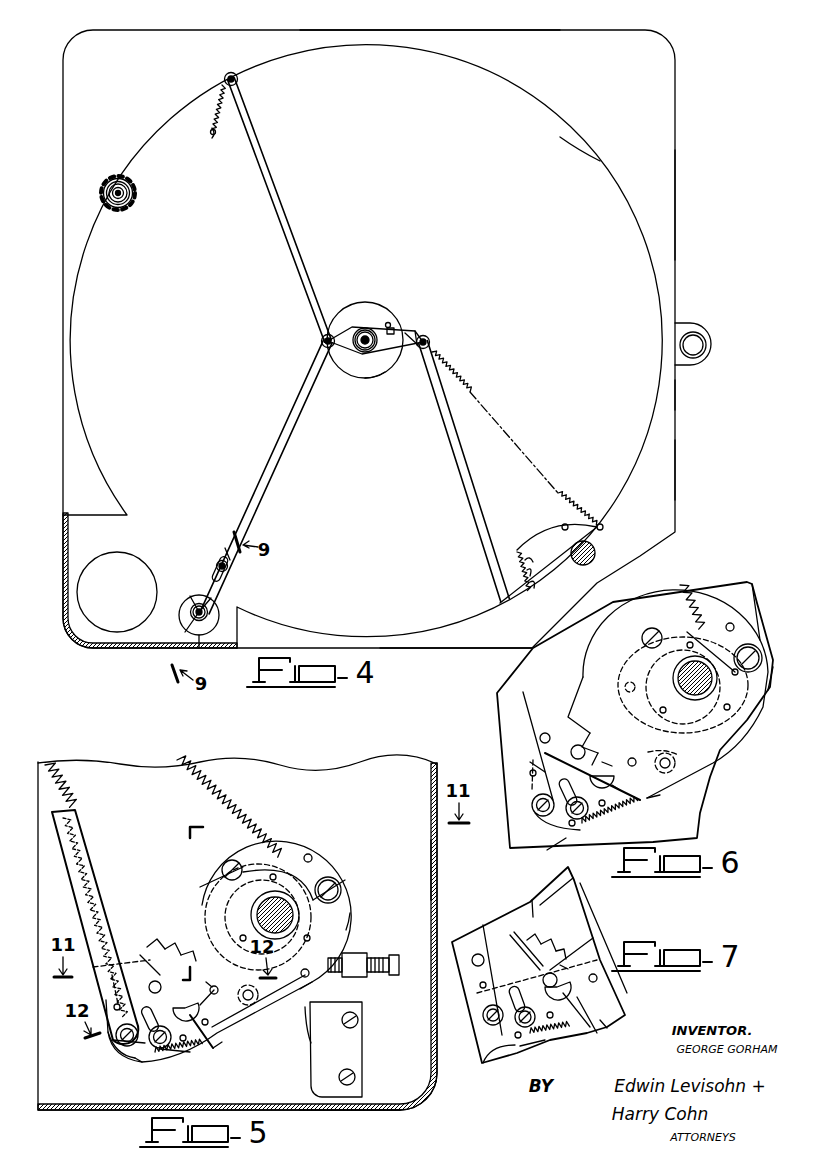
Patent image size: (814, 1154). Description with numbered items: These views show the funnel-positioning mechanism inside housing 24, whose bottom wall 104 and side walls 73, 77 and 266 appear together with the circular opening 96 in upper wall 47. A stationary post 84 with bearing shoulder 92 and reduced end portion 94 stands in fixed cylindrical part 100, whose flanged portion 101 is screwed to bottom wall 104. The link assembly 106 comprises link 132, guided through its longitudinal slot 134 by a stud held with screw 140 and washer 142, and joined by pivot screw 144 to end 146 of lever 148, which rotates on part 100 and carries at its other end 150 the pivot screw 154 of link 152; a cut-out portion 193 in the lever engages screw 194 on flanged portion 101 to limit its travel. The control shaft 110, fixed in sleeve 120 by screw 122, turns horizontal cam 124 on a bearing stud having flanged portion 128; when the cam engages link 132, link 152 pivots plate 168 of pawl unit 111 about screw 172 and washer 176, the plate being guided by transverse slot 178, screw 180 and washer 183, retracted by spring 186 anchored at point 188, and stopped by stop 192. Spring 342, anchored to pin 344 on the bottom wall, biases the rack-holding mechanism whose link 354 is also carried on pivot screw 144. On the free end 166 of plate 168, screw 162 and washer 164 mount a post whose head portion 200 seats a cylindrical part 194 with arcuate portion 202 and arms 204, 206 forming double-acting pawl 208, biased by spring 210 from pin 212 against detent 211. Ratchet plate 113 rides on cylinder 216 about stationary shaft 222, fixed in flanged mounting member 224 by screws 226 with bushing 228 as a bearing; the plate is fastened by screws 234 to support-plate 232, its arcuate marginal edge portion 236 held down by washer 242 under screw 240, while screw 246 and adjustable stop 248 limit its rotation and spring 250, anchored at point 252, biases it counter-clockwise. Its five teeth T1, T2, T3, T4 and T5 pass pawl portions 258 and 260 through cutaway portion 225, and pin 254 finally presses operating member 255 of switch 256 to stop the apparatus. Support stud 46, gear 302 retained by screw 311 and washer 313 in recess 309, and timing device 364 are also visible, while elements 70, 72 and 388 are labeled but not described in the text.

In FIG. 4, the housing 24 is at (683, 210).
In FIG. 4, the support stud 46 is at (584, 565).
In FIG. 4, the upper housing wall 47 is at (662, 468).
In FIG. 4, the knob 70 is at (700, 336).
In FIG. 4, the knob bushing 72 is at (711, 346).
In FIG. 4, the side wall 73 is at (678, 398).
In FIG. 5, the side wall 73 is at (437, 869).
In FIG. 4, the side wall 77 is at (487, 650).
In FIG. 5, the side wall 77 is at (345, 1112).
In FIG. 4, the stationary vertical shaft 84 is at (352, 333).
In FIG. 4, the horizontal bearing shoulder 92 is at (363, 348).
In FIG. 4, the reduced end portion 94 is at (365, 329).
In FIG. 4, the circular opening 96 is at (577, 138).
In FIG. 4, the fixed cylindrical part 100 is at (362, 383).
In FIG. 4, the flanged portion 101 is at (357, 306).
In FIG. 4, the bottom wall 104 is at (68, 541).
In FIG. 6, the bottom wall 104 is at (749, 582).
In FIG. 5, the bottom wall 104 is at (352, 765).
In FIG. 7, the bottom wall 104 is at (527, 896).
In FIG. 4, the link assembly 106 is at (306, 354).
In FIG. 4, the rotatable shaft 110 is at (194, 606).
In FIG. 6, the pawl unit 111 is at (540, 831).
In FIG. 5, the pawl unit 111 is at (122, 1066).
In FIG. 7, the pawl unit 111 is at (489, 1047).
In FIG. 4, the ratchet plate 113 is at (541, 542).
In FIG. 6, the ratchet plate 113 is at (600, 673).
In FIG. 5, the ratchet plate 113 is at (193, 892).
In FIG. 7, the ratchet plate 113 is at (580, 921).
In FIG. 4, the rotatable sleeve 120 is at (189, 618).
In FIG. 4, the screw 122 is at (212, 606).
In FIG. 4, the horizontal cam 124 is at (207, 632).
In FIG. 4, the flanged portion 128 is at (195, 600).
In FIG. 4, the link 132 is at (262, 476).
In FIG. 4, the longitudinal slot 134 is at (213, 571).
In FIG. 4, the screw 140 is at (222, 561).
In FIG. 4, the washer 142 is at (228, 566).
In FIG. 4, the pivot screw 144 is at (323, 340).
In FIG. 4, the lever end 146 is at (337, 338).
In FIG. 4, the lever 148 is at (410, 338).
In FIG. 4, the lever end 150 is at (416, 349).
In FIG. 4, the link 152 is at (444, 453).
In FIG. 6, the link 152 is at (525, 700).
In FIG. 5, the link 152 is at (88, 832).
In FIG. 7, the link 152 is at (470, 930).
In FIG. 4, the pivot screw 154 is at (430, 341).
In FIG. 6, the screw 162 is at (532, 804).
In FIG. 5, the screw 162 is at (116, 1037).
In FIG. 7, the screw 162 is at (483, 1016).
In FIG. 6, the washer 164 is at (566, 810).
In FIG. 5, the washer 164 is at (149, 1040).
In FIG. 7, the washer 164 is at (515, 1022).
In FIG. 6, the free end 166 is at (556, 830).
In FIG. 5, the free end 166 is at (127, 1062).
In FIG. 7, the free end 166 is at (501, 1041).
In FIG. 6, the pivoted plate 168 is at (566, 840).
In FIG. 5, the pivoted plate 168 is at (252, 1010).
In FIG. 7, the pivoted plate 168 is at (513, 1047).
In FIG. 6, the screw 172 is at (678, 763).
In FIG. 5, the screw 172 is at (256, 996).
In FIG. 6, the washer 176 is at (680, 775).
In FIG. 5, the washer 176 is at (258, 1002).
In FIG. 6, the transverse slot 178 is at (568, 792).
In FIG. 5, the transverse slot 178 is at (153, 1008).
In FIG. 7, the transverse slot 178 is at (517, 999).
In FIG. 5, the screw 180 is at (178, 1040).
In FIG. 5, the washer 183 is at (143, 1043).
In FIG. 5, the spring 186 is at (75, 795).
In FIG. 6, the spring attachment point 188 is at (530, 775).
In FIG. 5, the spring attachment point 188 is at (114, 1006).
In FIG. 7, the spring attachment point 188 is at (480, 988).
In FIG. 6, the stop 192 is at (574, 750).
In FIG. 5, the stop 192 is at (152, 982).
In FIG. 7, the stop 192 is at (542, 977).
In FIG. 4, the cut-out portion 193 is at (397, 331).
In FIG. 4, the cylindrical part 194 is at (391, 322).
In FIG. 7, the cylindrical part 194 is at (605, 1029).
In FIG. 6, the circular head portion 200 is at (614, 776).
In FIG. 5, the circular head portion 200 is at (198, 1005).
In FIG. 7, the circular head portion 200 is at (558, 991).
In FIG. 6, the arcuate portion 202 is at (622, 786).
In FIG. 7, the arcuate portion 202 is at (590, 1034).
In FIG. 6, the pawl arm 204 is at (652, 797).
In FIG. 5, the pawl arm 204 is at (218, 1044).
In FIG. 4, the pawl arm 206 is at (520, 552).
In FIG. 6, the pawl arm 206 is at (530, 762).
In FIG. 5, the pawl arm 206 is at (95, 969).
In FIG. 7, the pawl arm 206 is at (528, 930).
In FIG. 6, the double-acting pawl 208 is at (538, 790).
In FIG. 5, the double-acting pawl 208 is at (200, 1017).
In FIG. 6, the spring 210 is at (618, 815).
In FIG. 5, the spring 210 is at (188, 1056).
In FIG. 7, the spring 210 is at (556, 1038).
In FIG. 6, the detent 211 is at (604, 820).
In FIG. 5, the detent 211 is at (212, 1034).
In FIG. 7, the detent 211 is at (540, 1040).
In FIG. 5, the pin 212 is at (165, 1052).
In FIG. 6, the cylinder 216 is at (692, 668).
In FIG. 5, the cylinder 216 is at (259, 902).
In FIG. 6, the stationary shaft 222 is at (718, 686).
In FIG. 5, the stationary shaft 222 is at (300, 917).
In FIG. 4, the flanged mounting member 224 is at (604, 522).
In FIG. 6, the flanged mounting member 224 is at (710, 618).
In FIG. 5, the flanged mounting member 224 is at (302, 850).
In FIG. 6, the cutaway portion 225 is at (670, 752).
In FIG. 5, the cutaway portion 225 is at (258, 995).
In FIG. 6, the screws 226 is at (733, 625).
In FIG. 5, the screws 226 is at (313, 857).
In FIG. 6, the bushing 228 is at (663, 680).
In FIG. 5, the bushing 228 is at (264, 917).
In FIG. 6, the support-plate 232 is at (678, 733).
In FIG. 5, the support-plate 232 is at (217, 905).
In FIG. 6, the screws 234 is at (695, 677).
In FIG. 5, the screws 234 is at (318, 936).
In FIG. 6, the arcuate marginal edge portion 236 is at (762, 636).
In FIG. 5, the arcuate marginal edge portion 236 is at (332, 880).
In FIG. 6, the screw 240 is at (759, 655).
In FIG. 5, the screw 240 is at (340, 886).
In FIG. 6, the washer 242 is at (762, 661).
In FIG. 5, the washer 242 is at (342, 892).
In FIG. 4, the screw 246 is at (565, 523).
In FIG. 6, the screw 246 is at (648, 628).
In FIG. 5, the screw 246 is at (228, 864).
In FIG. 5, the adjustable stop 248 is at (371, 952).
In FIG. 4, the spring 250 is at (486, 409).
In FIG. 6, the spring 250 is at (682, 592).
In FIG. 5, the spring 250 is at (257, 830).
In FIG. 6, the spring attachment point 252 is at (765, 675).
In FIG. 5, the spring attachment point 252 is at (350, 909).
In FIG. 6, the downwardly extending pin 254 is at (637, 758).
In FIG. 5, the downwardly extending pin 254 is at (226, 986).
In FIG. 7, the downwardly extending pin 254 is at (598, 979).
In FIG. 5, the operating member 255 is at (304, 1028).
In FIG. 5, the switch 256 is at (363, 1026).
In FIG. 7, the vertical pawl portion 258 is at (586, 1009).
In FIG. 7, the vertical pawl portion 260 is at (594, 942).
In FIG. 4, the side wall 266 is at (428, 30).
In FIG. 4, the gear 302 is at (136, 204).
In FIG. 4, the recess 309 is at (133, 191).
In FIG. 4, the screw 311 is at (112, 192).
In FIG. 4, the washer 313 is at (115, 187).
In FIG. 4, the spring 342 is at (209, 119).
In FIG. 4, the pin 344 is at (205, 138).
In FIG. 4, the link 354 is at (272, 168).
In FIG. 4, the timing device 364 is at (123, 563).
In FIG. 4, the pivot 388 is at (225, 78).
In FIG. 5, the ratchet tooth T1 is at (206, 988).
In FIG. 7, the ratchet tooth T1 is at (585, 980).
In FIG. 6, the ratchet tooth T2 is at (614, 756).
In FIG. 5, the ratchet tooth T2 is at (213, 976).
In FIG. 7, the ratchet tooth T2 is at (570, 969).
In FIG. 4, the ratchet tooth T3 is at (539, 584).
In FIG. 6, the ratchet tooth T3 is at (601, 750).
In FIG. 5, the ratchet tooth T3 is at (186, 958).
In FIG. 7, the ratchet tooth T3 is at (563, 955).
In FIG. 4, the ratchet tooth T4 is at (536, 569).
In FIG. 6, the ratchet tooth T4 is at (594, 735).
In FIG. 5, the ratchet tooth T4 is at (174, 946).
In FIG. 7, the ratchet tooth T4 is at (552, 943).
In FIG. 4, the ratchet tooth T5 is at (533, 554).
In FIG. 6, the ratchet tooth T5 is at (584, 705).
In FIG. 5, the ratchet tooth T5 is at (154, 936).
In FIG. 7, the ratchet tooth T5 is at (540, 933).